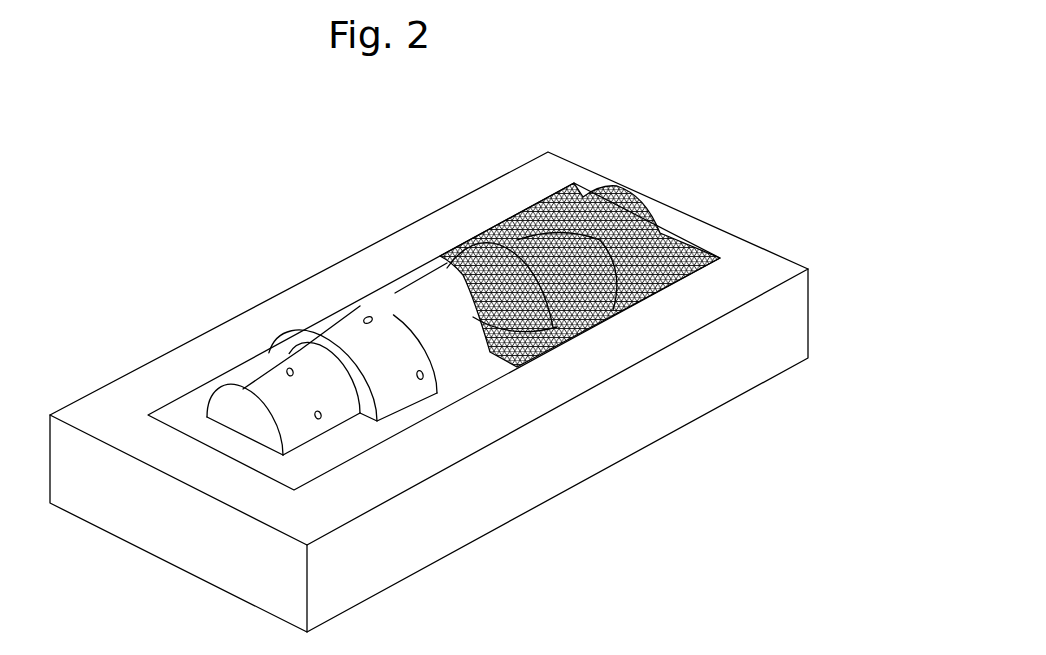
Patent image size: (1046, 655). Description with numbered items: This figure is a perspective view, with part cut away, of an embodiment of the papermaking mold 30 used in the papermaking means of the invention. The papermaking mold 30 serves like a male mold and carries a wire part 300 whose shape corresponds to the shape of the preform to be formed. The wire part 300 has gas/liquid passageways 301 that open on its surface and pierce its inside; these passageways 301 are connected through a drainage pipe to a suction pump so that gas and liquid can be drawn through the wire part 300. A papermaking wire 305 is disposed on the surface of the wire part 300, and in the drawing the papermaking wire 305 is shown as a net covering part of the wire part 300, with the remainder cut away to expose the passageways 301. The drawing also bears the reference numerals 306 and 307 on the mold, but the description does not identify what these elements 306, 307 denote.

The papermaking mold 30 is at (296, 231).
The wire part 300 is at (395, 293).
The gas/liquid passageways 301 is at (363, 317).
The papermaking wire 305 is at (447, 262).
The ring member 306 is at (415, 420).
The hole 307 is at (425, 374).